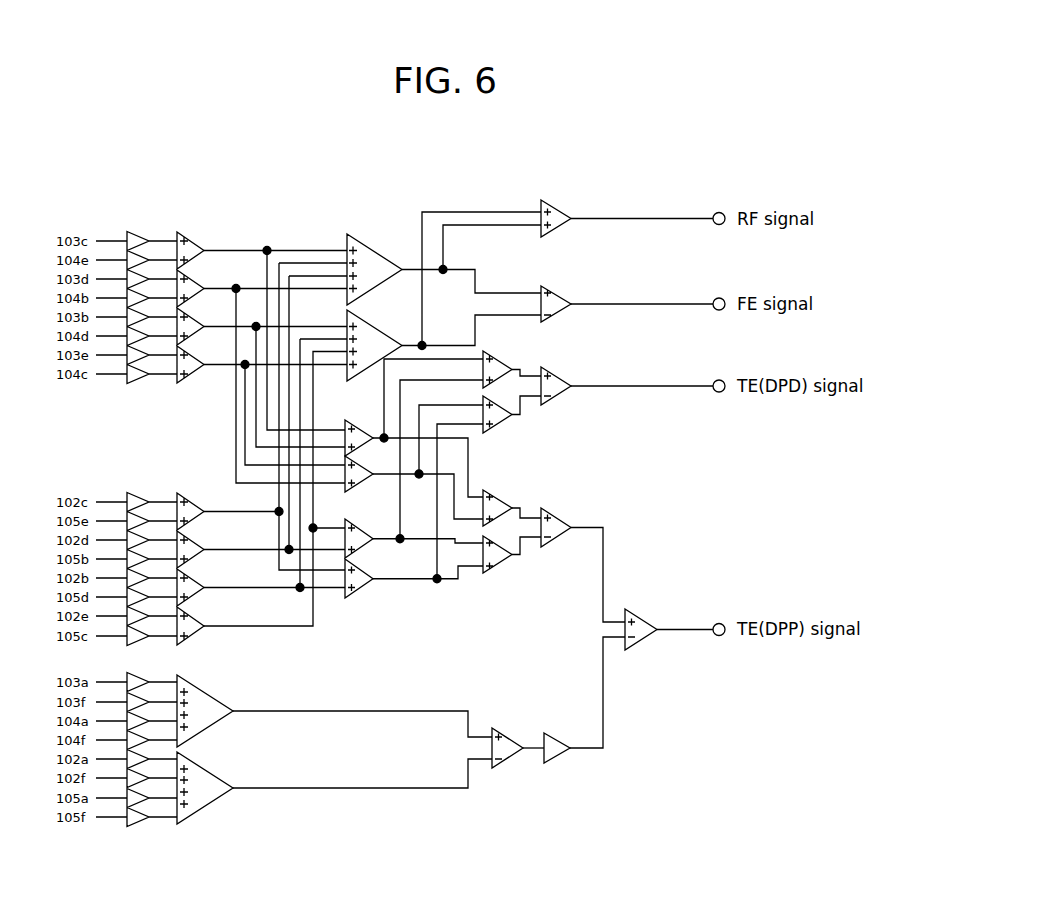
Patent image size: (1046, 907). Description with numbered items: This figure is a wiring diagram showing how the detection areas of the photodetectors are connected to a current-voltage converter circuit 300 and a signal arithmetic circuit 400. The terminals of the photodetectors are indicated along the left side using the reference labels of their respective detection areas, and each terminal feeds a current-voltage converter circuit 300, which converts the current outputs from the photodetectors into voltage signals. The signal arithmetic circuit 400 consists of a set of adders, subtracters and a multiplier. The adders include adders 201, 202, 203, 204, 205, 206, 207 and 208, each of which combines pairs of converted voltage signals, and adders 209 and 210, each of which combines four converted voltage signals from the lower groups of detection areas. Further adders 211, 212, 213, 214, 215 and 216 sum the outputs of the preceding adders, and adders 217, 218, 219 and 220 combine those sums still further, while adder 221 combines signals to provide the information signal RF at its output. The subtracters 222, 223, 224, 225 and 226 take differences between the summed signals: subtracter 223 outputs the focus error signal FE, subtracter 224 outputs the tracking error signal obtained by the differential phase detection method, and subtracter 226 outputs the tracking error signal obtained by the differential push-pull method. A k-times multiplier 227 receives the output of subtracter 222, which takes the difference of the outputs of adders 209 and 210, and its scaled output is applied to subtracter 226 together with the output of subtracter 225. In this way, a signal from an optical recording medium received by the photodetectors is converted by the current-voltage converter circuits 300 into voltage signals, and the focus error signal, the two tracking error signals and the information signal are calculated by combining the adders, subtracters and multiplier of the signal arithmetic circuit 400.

The adder 201 is at (190, 241).
The adder 202 is at (190, 279).
The adder 203 is at (190, 317).
The adder 204 is at (190, 355).
The adder 205 is at (195, 503).
The adder 206 is at (195, 541).
The adder 207 is at (195, 579).
The adder 208 is at (195, 617).
The adder 209 is at (207, 694).
The adder 210 is at (207, 771).
The adder 211 is at (372, 247).
The adder 212 is at (372, 322).
The adder 213 is at (360, 423).
The adder 214 is at (352, 462).
The adder 215 is at (360, 525).
The adder 216 is at (360, 566).
The adder 217 is at (495, 357).
The adder 218 is at (497, 399).
The adder 219 is at (497, 497).
The adder 220 is at (497, 541).
The adder 221 is at (553, 209).
The subtracter 222 is at (500, 732).
The subtracter 223 is at (560, 296).
The subtracter 224 is at (555, 377).
The subtracter 225 is at (553, 511).
The subtracter 226 is at (638, 617).
The k-times multiplier 227 is at (567, 757).
The current-voltage converter circuit 300 is at (146, 229).
The signal arithmetic circuit 400 is at (371, 809).